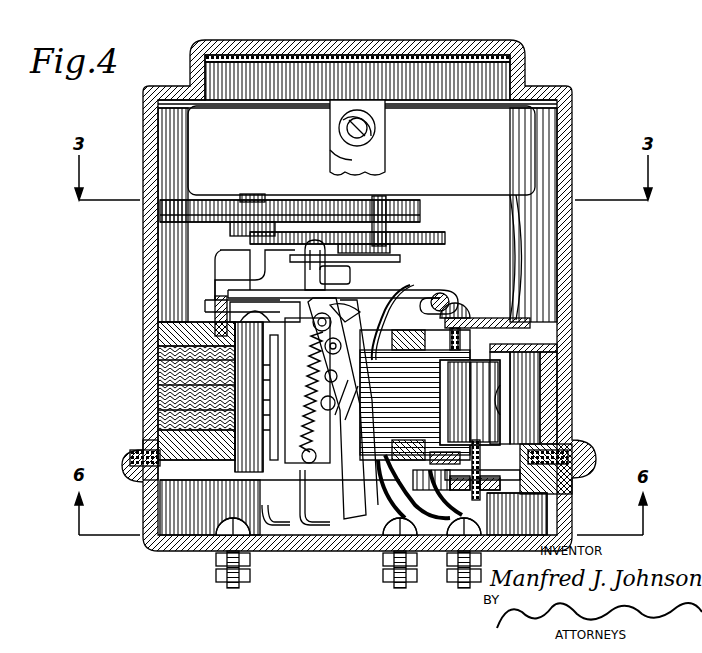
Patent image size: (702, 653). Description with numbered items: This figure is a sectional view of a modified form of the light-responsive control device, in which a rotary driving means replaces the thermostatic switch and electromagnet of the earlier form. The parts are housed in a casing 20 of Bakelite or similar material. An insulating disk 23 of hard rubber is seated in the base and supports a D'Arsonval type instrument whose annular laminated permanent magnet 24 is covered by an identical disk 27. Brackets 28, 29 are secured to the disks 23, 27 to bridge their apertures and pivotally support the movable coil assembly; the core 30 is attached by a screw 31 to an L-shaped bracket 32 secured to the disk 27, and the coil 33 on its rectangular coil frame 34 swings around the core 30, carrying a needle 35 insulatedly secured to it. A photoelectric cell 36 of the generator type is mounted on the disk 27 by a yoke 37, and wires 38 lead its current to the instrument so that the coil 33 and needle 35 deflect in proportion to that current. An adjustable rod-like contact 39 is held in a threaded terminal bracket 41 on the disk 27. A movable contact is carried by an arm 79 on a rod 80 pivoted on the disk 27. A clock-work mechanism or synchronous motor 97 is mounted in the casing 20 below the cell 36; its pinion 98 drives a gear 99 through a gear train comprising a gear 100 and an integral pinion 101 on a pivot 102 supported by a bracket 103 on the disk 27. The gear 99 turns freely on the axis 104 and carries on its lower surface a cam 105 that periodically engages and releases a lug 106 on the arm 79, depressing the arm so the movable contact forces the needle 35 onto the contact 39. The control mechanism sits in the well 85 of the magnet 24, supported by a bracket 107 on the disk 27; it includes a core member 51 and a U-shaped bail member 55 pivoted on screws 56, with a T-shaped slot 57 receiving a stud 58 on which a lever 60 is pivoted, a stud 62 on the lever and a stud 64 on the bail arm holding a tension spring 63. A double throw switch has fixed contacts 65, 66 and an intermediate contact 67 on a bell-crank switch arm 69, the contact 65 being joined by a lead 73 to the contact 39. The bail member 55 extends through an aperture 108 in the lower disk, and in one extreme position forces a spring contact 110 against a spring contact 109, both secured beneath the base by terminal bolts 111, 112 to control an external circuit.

The casing 20 is at (594, 304).
The disk 23 is at (555, 448).
The permanent magnet 24 is at (546, 398).
The disk 27 is at (162, 342).
The bracket 28 is at (462, 500).
The bracket 29 is at (478, 318).
The core 30 is at (545, 413).
The screw 31 is at (505, 388).
The L-shaped bracket 32 is at (550, 360).
The coil 33 is at (473, 394).
The coil frame 34 is at (463, 388).
The needle 35 is at (256, 300).
The photoelectric cell 36 is at (457, 72).
The yoke 37 is at (335, 158).
The wires 38 is at (514, 226).
The contact 39 is at (230, 296).
The terminal bracket 41 is at (286, 280).
The core member 51 is at (304, 485).
The bail member 55 is at (395, 505).
The pivot screws 56 is at (339, 348).
The T-shaped slot 57 is at (348, 378).
The stud 58 is at (332, 425).
The lever 60 is at (317, 455).
The stud 62 is at (306, 458).
The tension spring 63 is at (309, 384).
The stud 64 is at (316, 328).
The contact 65 is at (160, 366).
The contact 66 is at (262, 428).
The contact 67 is at (160, 410).
The switch arm 69 is at (278, 400).
The lead 73 is at (165, 332).
The arm 79 is at (410, 288).
The rod 80 is at (455, 290).
The well 85 is at (378, 344).
The synchronous motor 97 is at (548, 130).
The pinion 98 is at (388, 211).
The gear 99 is at (436, 232).
The gear 100 is at (284, 214).
The pinion 101 is at (236, 222).
The pivot 102 is at (249, 198).
The bracket 103 is at (215, 276).
The axis 104 is at (392, 248).
The cam 105 is at (402, 260).
The lug 106 is at (352, 276).
The bracket 107 is at (349, 316).
The aperture 108 is at (312, 551).
The spring contact 109 is at (276, 551).
The spring contact 110 is at (300, 530).
The terminal bolt 111 is at (236, 590).
The terminal bolt 112 is at (396, 592).